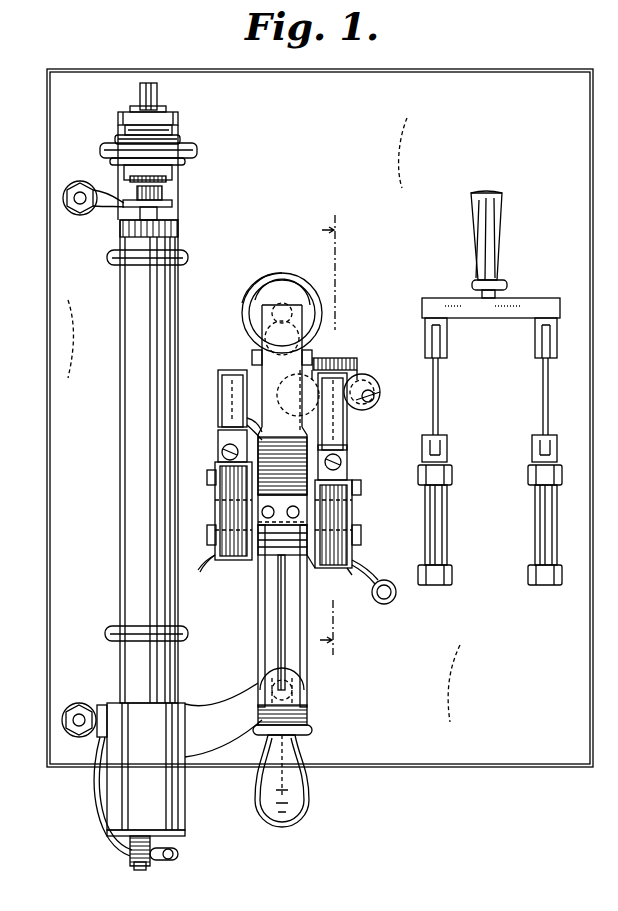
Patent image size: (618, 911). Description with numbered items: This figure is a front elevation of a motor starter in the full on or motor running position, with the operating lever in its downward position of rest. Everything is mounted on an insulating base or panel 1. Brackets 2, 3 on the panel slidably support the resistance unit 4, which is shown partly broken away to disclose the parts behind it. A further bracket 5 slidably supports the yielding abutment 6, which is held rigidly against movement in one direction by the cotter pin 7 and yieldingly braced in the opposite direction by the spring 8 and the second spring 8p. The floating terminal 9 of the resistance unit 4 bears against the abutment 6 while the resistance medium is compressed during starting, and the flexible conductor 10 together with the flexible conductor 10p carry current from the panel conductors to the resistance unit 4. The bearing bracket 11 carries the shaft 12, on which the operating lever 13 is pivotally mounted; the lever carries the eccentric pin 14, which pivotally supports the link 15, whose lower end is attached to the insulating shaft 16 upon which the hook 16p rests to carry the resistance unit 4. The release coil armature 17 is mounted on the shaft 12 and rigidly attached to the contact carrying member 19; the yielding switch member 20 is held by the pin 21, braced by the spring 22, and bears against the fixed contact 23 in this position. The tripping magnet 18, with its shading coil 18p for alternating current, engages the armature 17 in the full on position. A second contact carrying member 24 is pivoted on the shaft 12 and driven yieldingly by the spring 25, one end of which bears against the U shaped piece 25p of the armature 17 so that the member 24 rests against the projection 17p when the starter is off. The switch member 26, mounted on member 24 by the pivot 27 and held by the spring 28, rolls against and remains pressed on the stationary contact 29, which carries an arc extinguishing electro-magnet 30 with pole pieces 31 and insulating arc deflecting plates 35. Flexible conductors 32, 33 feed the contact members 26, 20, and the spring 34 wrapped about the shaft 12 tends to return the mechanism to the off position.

The insulating base or panel 1 is at (320, 418).
The bracket 2 is at (190, 259).
The bracket 3 is at (190, 636).
The resistance unit 4 is at (149, 461).
The bracket 5 is at (180, 118).
The yielding abutment 6 is at (168, 183).
The cotter pin 7 is at (158, 108).
The spring 8 is at (100, 154).
The spring 8p is at (185, 140).
The floating terminal 9 is at (163, 192).
The flexible conductor 10 is at (112, 214).
The flexible conductor 10p is at (100, 845).
The bearing bracket 11 is at (212, 560).
The shaft 12 is at (361, 535).
The operating lever 13 is at (310, 800).
The eccentric pin 14 is at (265, 568).
The link 15 is at (287, 624).
The insulating shaft 16 is at (305, 702).
The hook 16p is at (299, 689).
The release coil armature 17 is at (282, 430).
The projection 17p is at (352, 498).
The no voltage release coil or tripping magnet 18 is at (282, 313).
The shading coil 18p is at (249, 308).
The contact carrying member 19 is at (216, 502).
The yielding contact or switch member 20 is at (230, 403).
The pin 21 is at (207, 477).
The spring 22 is at (218, 455).
The fixed contact 23 is at (228, 370).
The contact carrying member 24 is at (352, 515).
The spring 25 is at (348, 572).
The U shaped piece 25p is at (316, 570).
The yielding contact or switch member 26 is at (338, 427).
The pivot 27 is at (361, 487).
The spring 28 is at (343, 468).
The stationary contact 29 is at (368, 378).
The electro-magnet 30 is at (330, 358).
The pole pieces 31 is at (376, 392).
The flexible conductor 32 is at (396, 593).
The flexible conductor 33 is at (240, 428).
The spring 34 is at (236, 556).
The insulating arc deflecting plates 35 is at (322, 428).